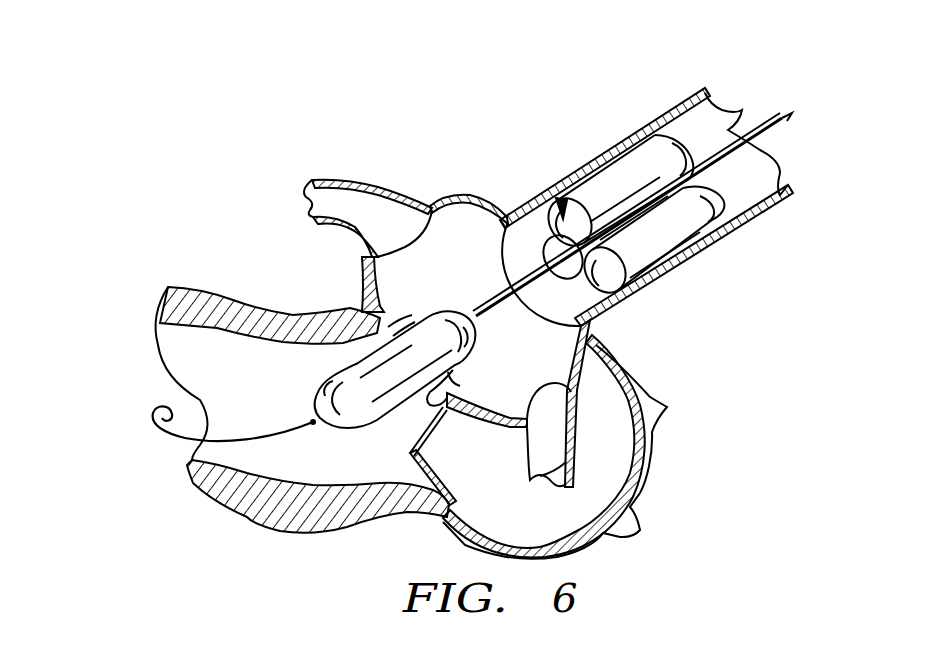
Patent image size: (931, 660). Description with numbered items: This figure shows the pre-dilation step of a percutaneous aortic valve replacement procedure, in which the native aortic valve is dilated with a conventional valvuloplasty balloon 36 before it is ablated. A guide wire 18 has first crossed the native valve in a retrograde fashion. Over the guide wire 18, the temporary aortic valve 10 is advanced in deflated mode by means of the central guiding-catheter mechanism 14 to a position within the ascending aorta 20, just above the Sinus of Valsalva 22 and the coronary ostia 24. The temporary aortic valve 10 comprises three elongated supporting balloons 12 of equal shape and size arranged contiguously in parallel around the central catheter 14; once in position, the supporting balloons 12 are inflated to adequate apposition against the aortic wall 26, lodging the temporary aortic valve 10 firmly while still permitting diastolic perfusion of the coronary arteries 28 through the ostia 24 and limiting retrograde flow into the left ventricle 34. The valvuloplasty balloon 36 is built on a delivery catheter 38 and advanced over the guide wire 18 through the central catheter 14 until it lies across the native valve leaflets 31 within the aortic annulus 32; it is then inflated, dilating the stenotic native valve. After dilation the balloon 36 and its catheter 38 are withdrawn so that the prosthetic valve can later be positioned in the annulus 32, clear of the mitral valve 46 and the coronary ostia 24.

The temporary aortic valve 10 is at (560, 206).
The supporting balloon 12 is at (693, 250).
The central guiding-catheter mechanism 14 is at (776, 138).
The guide wire 18 is at (153, 437).
The ascending aorta 20 is at (727, 130).
The Sinus of Valsalva 22 is at (462, 240).
The coronary ostia 24 is at (402, 242).
The aortic wall 26 is at (673, 110).
The coronary arteries 28 is at (332, 197).
The valve leaflets 31 is at (393, 317).
The aortic annulus 32 is at (353, 317).
The left ventricle 34 is at (210, 347).
The valvuloplasty balloon 36 is at (345, 380).
The delivery catheter 38 is at (490, 316).
The mitral valve 46 is at (410, 452).